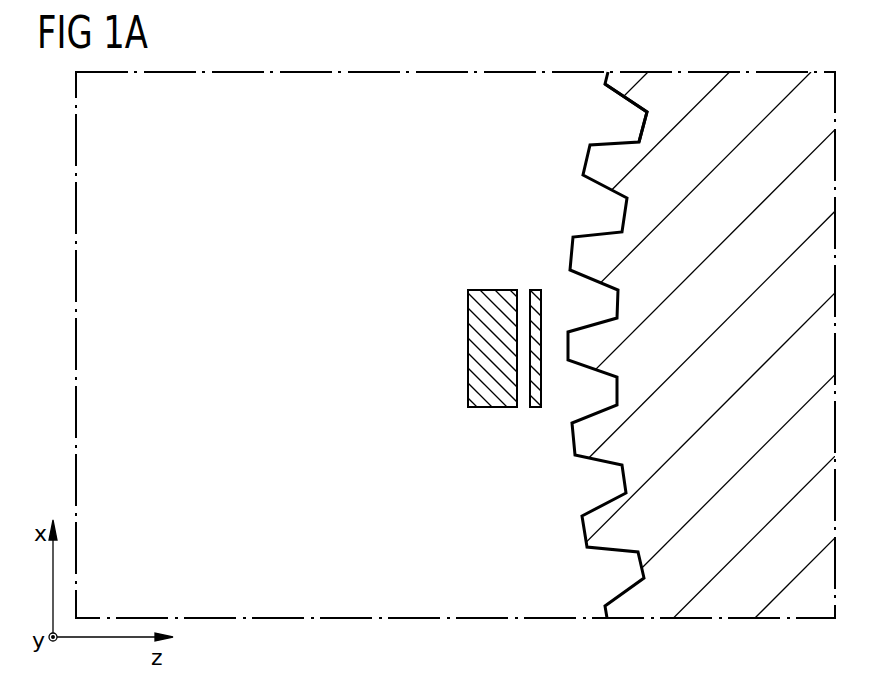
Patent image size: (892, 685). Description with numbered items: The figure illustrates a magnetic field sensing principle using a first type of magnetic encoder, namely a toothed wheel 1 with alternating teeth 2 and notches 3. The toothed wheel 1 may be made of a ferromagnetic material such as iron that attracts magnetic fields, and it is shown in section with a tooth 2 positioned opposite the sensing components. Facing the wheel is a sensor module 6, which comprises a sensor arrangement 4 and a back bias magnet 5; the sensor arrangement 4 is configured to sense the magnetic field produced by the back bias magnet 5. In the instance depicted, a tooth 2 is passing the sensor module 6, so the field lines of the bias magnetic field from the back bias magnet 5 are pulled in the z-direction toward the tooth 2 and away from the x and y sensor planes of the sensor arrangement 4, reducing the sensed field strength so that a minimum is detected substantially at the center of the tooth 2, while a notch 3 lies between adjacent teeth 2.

The toothed wheel 1 is at (690, 88).
The tooth 2 is at (587, 157).
The notch 3 is at (597, 117).
The sensor arrangement 4 is at (533, 408).
The back bias magnet 5 is at (492, 408).
The sensor module 6 is at (461, 383).